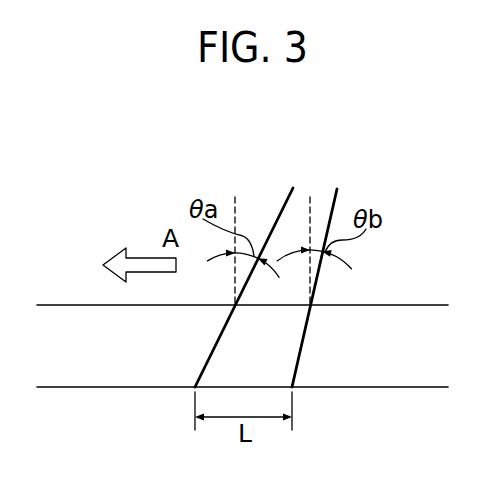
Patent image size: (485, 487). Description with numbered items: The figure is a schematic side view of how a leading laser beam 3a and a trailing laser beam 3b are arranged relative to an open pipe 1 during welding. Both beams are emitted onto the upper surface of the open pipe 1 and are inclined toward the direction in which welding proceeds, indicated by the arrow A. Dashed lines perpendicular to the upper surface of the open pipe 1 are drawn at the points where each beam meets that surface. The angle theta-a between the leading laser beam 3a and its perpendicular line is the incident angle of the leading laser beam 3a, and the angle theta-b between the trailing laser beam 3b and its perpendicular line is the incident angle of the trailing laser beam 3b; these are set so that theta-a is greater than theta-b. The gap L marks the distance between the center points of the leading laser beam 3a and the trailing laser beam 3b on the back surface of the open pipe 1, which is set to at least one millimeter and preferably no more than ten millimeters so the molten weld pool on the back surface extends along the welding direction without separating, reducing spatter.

The open pipe 1 is at (92, 373).
The leading laser beam 3a is at (280, 216).
The trailing laser beam 3b is at (331, 213).